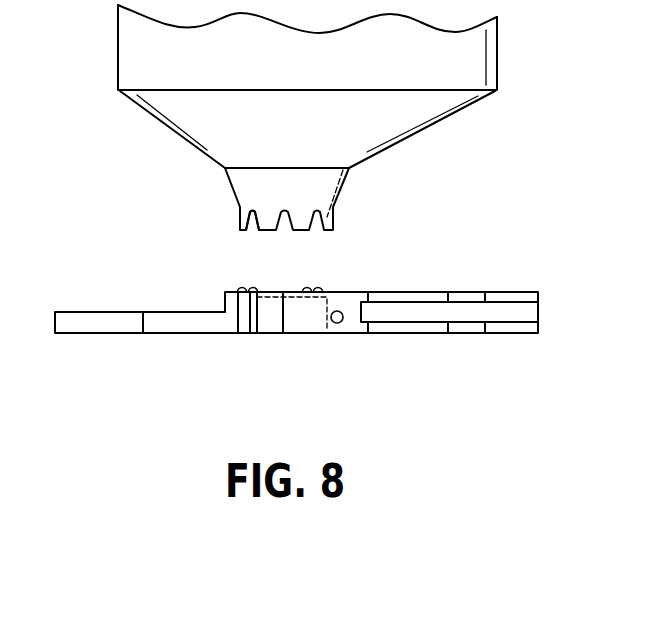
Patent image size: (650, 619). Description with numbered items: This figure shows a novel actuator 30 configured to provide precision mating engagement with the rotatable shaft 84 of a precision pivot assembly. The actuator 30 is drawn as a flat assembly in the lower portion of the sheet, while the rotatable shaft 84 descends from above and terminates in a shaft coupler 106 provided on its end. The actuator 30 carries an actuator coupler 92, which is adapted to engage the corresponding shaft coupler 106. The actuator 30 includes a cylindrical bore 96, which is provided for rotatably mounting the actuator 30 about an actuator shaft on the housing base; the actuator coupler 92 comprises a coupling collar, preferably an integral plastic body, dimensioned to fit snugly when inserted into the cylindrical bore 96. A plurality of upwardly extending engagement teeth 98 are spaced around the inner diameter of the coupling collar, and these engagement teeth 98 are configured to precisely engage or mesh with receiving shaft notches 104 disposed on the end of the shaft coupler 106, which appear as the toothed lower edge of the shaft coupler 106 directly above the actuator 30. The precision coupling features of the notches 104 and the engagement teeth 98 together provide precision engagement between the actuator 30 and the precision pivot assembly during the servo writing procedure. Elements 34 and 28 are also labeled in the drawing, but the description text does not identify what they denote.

The rotatable shaft 84 is at (498, 48).
The shaft coupler 106 is at (318, 185).
The receiving shaft notches 104 is at (247, 236).
The left plate 34 is at (67, 330).
The cylindrical bore 96 is at (258, 344).
The engagement teeth 98 is at (242, 287).
The actuator coupler 92 is at (335, 268).
The slide assembly 28 is at (500, 292).
The actuator 30 is at (338, 335).